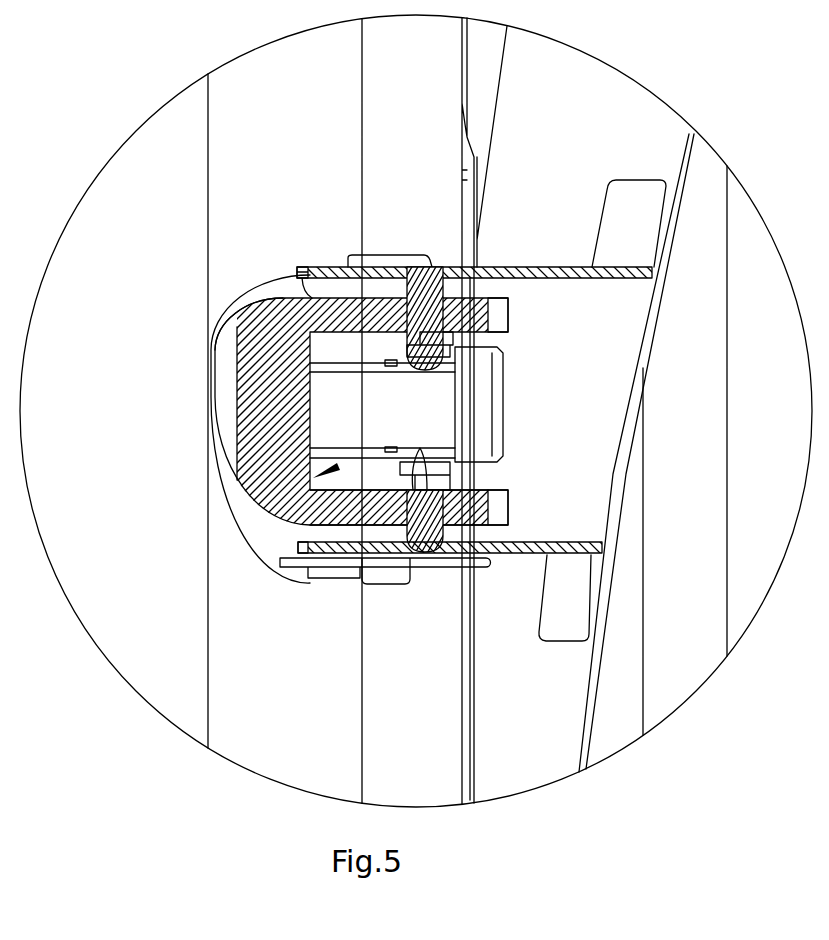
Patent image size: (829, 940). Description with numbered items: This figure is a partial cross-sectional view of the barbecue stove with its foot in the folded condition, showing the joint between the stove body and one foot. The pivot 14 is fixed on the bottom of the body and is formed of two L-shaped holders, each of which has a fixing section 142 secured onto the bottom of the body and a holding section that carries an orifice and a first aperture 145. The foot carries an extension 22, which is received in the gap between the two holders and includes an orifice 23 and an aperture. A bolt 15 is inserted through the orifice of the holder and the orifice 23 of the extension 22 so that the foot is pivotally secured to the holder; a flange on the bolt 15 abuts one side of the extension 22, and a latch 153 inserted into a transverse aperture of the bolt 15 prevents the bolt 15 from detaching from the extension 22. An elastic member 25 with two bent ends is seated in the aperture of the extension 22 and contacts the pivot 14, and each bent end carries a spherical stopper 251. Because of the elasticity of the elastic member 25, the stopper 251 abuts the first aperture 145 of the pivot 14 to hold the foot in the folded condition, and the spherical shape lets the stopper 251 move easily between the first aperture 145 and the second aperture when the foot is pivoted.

The pivot 14 is at (630, 235).
The fixing section 142 is at (302, 276).
The first aperture 145 is at (408, 267).
The bolt 15 is at (338, 403).
The extension 22 is at (279, 436).
The elastic member 25 is at (257, 500).
The spherical stopper 251 is at (283, 298).
The orifice 23 is at (313, 512).
The latch 153 is at (301, 577).